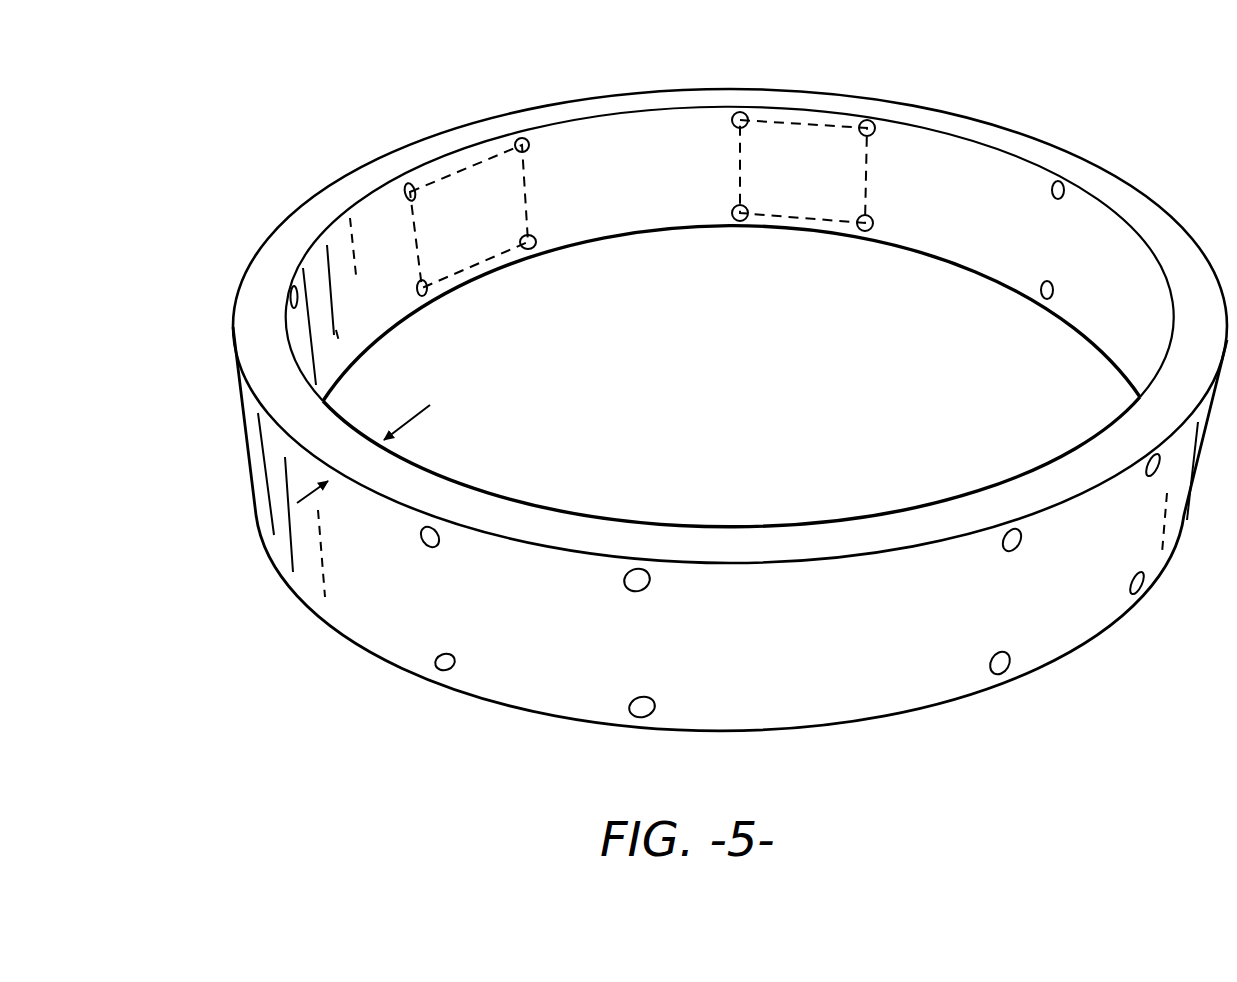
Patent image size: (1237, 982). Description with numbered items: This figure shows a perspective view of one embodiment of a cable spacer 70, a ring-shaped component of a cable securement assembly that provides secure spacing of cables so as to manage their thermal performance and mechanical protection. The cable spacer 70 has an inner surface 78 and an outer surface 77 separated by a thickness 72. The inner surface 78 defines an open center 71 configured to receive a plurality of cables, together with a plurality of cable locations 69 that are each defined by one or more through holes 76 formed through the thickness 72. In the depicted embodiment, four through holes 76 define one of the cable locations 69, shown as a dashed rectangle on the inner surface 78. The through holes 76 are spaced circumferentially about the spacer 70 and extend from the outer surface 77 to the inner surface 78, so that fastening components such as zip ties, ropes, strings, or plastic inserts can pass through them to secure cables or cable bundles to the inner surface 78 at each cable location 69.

The cable spacer 70 is at (252, 146).
The cable location 69 is at (463, 203).
The open center 71 is at (744, 404).
The thickness 72 is at (420, 413).
The through holes 76 is at (736, 210).
The outer surface 77 is at (307, 548).
The inner surface 78 is at (610, 197).